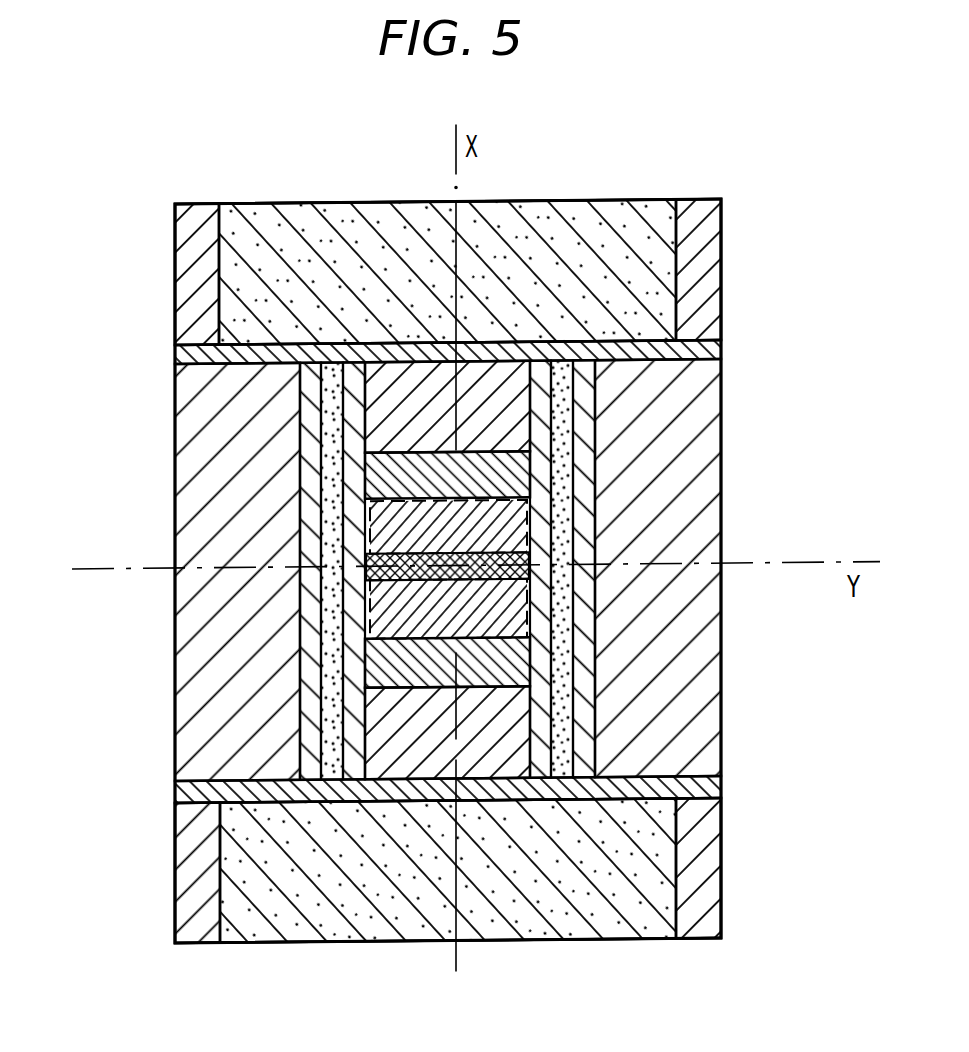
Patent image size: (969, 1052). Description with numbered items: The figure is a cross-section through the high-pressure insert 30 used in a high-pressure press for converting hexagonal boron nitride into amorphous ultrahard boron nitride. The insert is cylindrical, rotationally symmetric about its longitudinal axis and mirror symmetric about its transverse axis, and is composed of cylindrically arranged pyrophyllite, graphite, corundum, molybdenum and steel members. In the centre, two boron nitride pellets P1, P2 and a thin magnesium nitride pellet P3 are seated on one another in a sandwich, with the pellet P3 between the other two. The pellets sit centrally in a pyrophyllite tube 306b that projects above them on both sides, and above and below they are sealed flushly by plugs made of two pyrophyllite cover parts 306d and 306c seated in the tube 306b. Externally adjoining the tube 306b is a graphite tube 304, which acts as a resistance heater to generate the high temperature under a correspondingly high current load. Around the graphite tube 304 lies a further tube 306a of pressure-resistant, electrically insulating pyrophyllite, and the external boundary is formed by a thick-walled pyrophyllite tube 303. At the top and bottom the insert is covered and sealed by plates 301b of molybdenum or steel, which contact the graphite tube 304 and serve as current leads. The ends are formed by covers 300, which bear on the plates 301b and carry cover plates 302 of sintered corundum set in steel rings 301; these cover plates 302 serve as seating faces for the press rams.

The high-pressure insert 30 is at (600, 185).
The covers 300 is at (743, 202).
The steel rings 301 is at (192, 227).
The plates 301b is at (205, 352).
The cover plates 302 is at (338, 218).
The thick-walled tube 303 is at (190, 462).
The graphite tube 304 is at (325, 520).
The tube 306a is at (300, 652).
The tube 306b is at (355, 700).
The cover part 306c is at (480, 400).
The cover part 306d is at (490, 475).
The pellet P1 is at (513, 527).
The pellet P2 is at (507, 609).
The pellet P3 is at (370, 575).